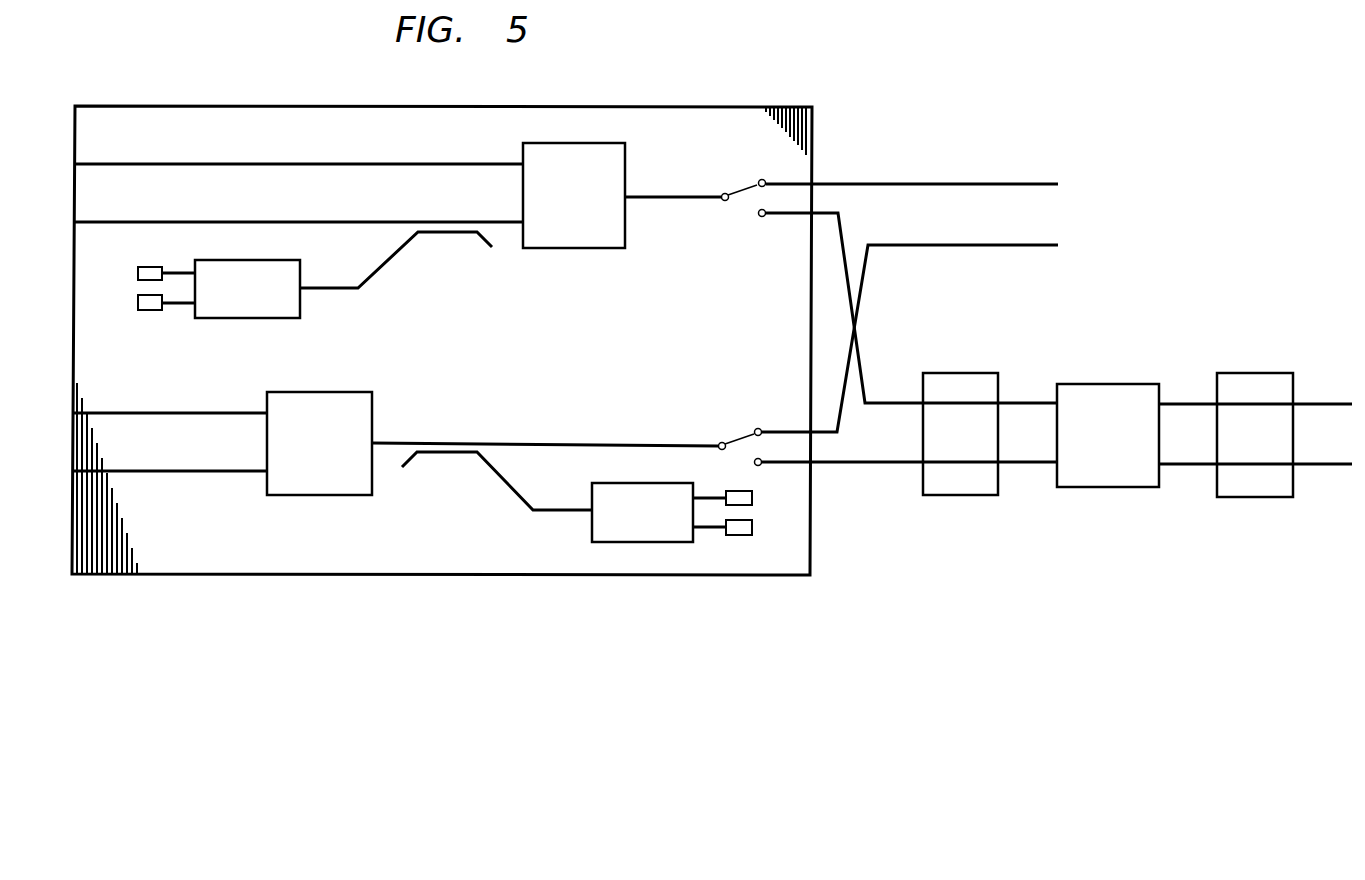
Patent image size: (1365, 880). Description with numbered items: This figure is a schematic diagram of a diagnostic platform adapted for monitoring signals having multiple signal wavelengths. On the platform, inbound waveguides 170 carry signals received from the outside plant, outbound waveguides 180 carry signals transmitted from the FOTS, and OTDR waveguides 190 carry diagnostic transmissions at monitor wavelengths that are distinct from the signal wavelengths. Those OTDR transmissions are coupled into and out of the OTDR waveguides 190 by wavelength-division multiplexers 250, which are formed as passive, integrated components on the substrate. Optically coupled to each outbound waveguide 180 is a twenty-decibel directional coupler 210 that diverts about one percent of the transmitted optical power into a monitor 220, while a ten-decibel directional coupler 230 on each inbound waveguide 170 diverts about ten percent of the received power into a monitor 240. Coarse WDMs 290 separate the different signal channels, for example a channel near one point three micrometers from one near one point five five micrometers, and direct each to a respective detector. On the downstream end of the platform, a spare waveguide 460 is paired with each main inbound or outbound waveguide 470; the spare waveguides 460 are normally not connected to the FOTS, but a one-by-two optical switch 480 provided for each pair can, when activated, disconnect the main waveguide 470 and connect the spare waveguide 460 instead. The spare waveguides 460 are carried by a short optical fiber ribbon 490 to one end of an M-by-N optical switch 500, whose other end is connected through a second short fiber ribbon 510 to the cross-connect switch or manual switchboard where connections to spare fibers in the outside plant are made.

The inbound waveguide 170 is at (115, 222).
The outbound waveguide 180 is at (120, 471).
The OTDR waveguide 190 is at (115, 164).
The 20-dB directional coupler 210 is at (447, 455).
The monitor 220 is at (742, 536).
The 10-dB directional coupler 230 is at (448, 238).
The monitor 240 is at (148, 265).
The wavelength-division multiplexer 250 is at (578, 145).
The coarse WDM 290 is at (250, 262).
The spare waveguide 460 is at (843, 225).
The main inbound or outbound waveguide 470 is at (845, 184).
The 1×2 optical switch 480 is at (721, 206).
The short optical fiber ribbon 490 is at (964, 378).
The M×N optical switch 500 is at (1110, 382).
The second short fiber ribbon 510 is at (1259, 378).